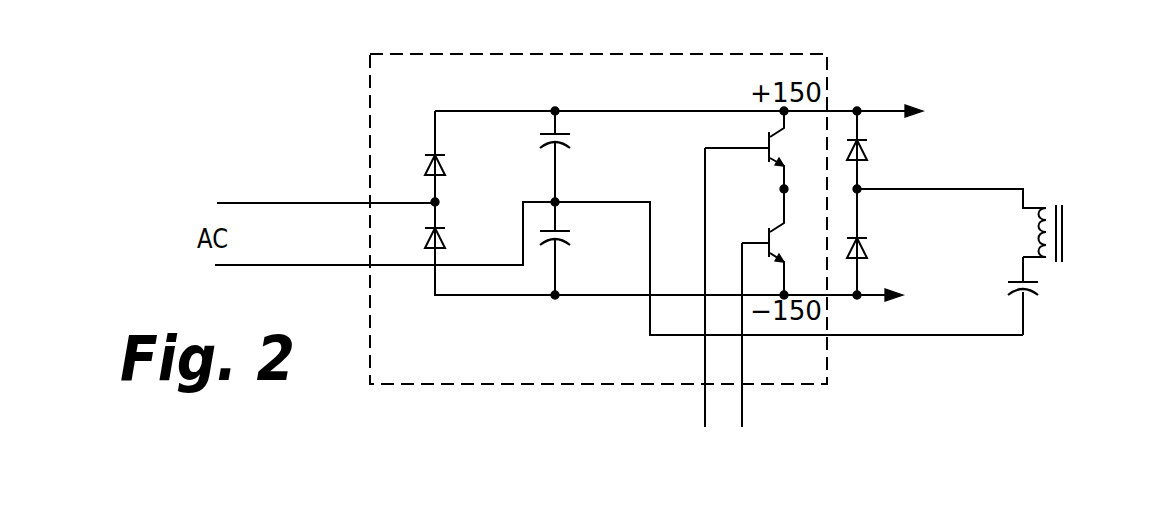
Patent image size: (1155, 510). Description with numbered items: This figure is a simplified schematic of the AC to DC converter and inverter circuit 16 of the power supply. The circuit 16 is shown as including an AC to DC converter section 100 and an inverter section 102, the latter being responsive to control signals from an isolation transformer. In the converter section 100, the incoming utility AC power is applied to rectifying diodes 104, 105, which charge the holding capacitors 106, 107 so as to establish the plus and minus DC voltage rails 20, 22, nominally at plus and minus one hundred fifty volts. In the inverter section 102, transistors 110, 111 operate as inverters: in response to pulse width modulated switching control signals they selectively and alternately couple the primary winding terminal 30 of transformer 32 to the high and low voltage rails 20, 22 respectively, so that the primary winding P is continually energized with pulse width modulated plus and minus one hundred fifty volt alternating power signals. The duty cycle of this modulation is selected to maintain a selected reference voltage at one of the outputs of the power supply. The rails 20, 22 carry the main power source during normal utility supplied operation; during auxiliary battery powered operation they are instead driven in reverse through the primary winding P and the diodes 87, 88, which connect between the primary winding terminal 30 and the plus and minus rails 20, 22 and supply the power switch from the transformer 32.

The AC to DC converter and inverter circuit 16 is at (548, 385).
The AC to DC converter section 100 is at (486, 91).
The inverter section 102 is at (680, 91).
The rectifying diode 104 is at (447, 166).
The rectifying diode 105 is at (447, 238).
The holding capacitor 106 is at (570, 126).
The holding capacitor 107 is at (605, 226).
The transistor 110 is at (768, 137).
The transistor 111 is at (770, 227).
The diode 87 is at (869, 148).
The diode 88 is at (869, 247).
The plus DC voltage rail 20 is at (878, 110).
The minus DC voltage rail 22 is at (870, 296).
The primary winding terminal 30 is at (907, 189).
The transformer 32 is at (1061, 329).
The primary winding P is at (1056, 200).